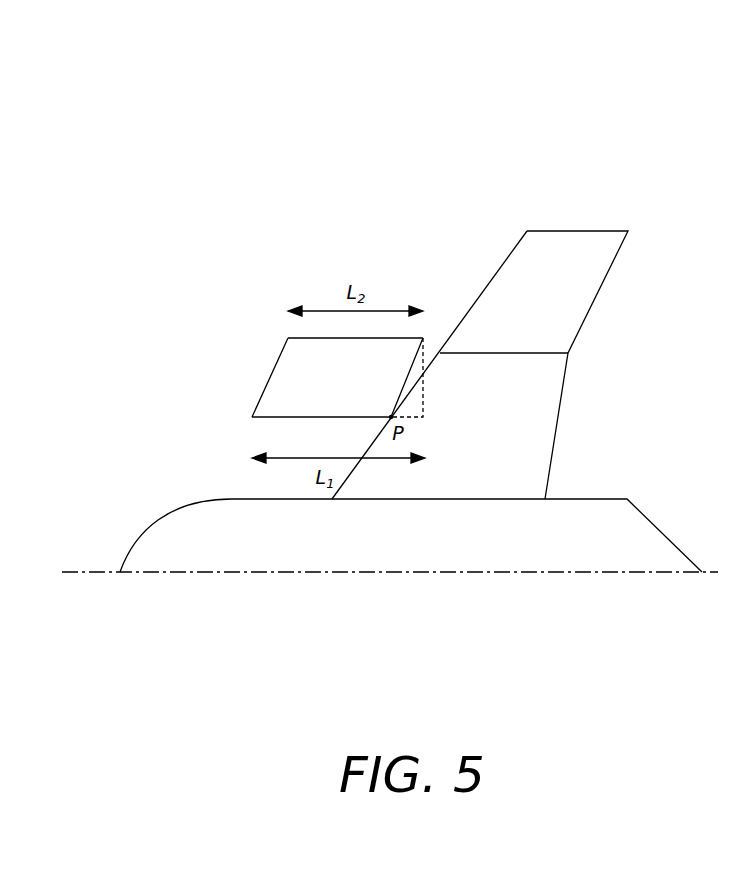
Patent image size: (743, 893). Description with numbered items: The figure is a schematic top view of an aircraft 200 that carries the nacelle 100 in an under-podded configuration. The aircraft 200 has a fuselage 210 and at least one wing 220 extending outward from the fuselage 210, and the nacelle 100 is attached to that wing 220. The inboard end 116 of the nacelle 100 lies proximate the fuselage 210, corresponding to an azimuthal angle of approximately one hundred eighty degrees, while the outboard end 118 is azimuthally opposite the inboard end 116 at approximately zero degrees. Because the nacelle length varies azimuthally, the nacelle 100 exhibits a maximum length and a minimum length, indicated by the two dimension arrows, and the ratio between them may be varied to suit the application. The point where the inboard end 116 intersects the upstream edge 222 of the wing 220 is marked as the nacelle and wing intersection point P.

The nacelle 100 is at (207, 375).
The inboard end 116 is at (302, 420).
The outboard end 118 is at (300, 338).
The aircraft 200 is at (578, 127).
The fuselage 210 is at (618, 499).
The wing 220 is at (553, 323).
The upstream edge 222 is at (470, 305).